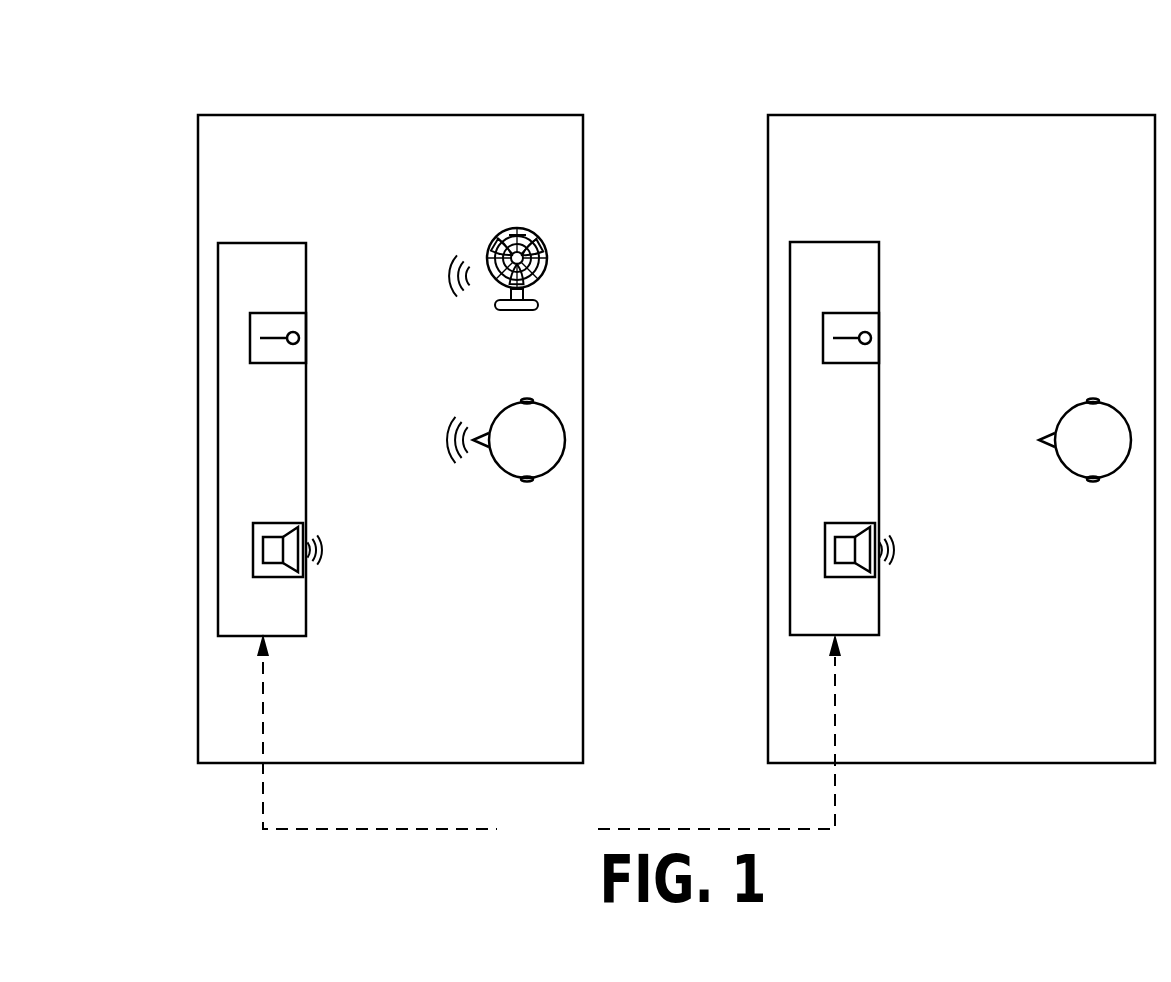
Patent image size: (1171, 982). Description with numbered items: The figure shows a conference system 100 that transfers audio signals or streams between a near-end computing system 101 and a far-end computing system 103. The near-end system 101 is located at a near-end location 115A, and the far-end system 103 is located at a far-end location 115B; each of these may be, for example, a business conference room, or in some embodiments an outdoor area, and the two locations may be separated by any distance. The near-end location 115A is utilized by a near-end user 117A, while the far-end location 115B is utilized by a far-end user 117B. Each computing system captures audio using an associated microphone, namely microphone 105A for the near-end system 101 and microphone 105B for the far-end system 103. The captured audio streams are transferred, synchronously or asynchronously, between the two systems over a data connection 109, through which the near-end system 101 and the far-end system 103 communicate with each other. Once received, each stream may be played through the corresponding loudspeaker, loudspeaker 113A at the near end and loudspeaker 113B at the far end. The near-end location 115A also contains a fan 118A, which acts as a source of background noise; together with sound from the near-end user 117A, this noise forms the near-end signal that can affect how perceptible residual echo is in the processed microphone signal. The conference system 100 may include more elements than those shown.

The conference system 100 is at (204, 99).
The near-end computing system 101 is at (262, 242).
The far-end computing system 103 is at (834, 242).
The microphone 105A is at (278, 313).
The microphone 105B is at (850, 313).
The data connection 109 is at (645, 829).
The loudspeaker 113A is at (280, 523).
The loudspeaker 113B is at (852, 523).
The near-end location 115A is at (545, 114).
The far-end location 115B is at (1115, 114).
The near-end user 117A is at (527, 428).
The far-end user 117B is at (1093, 428).
The fan 118A is at (519, 230).